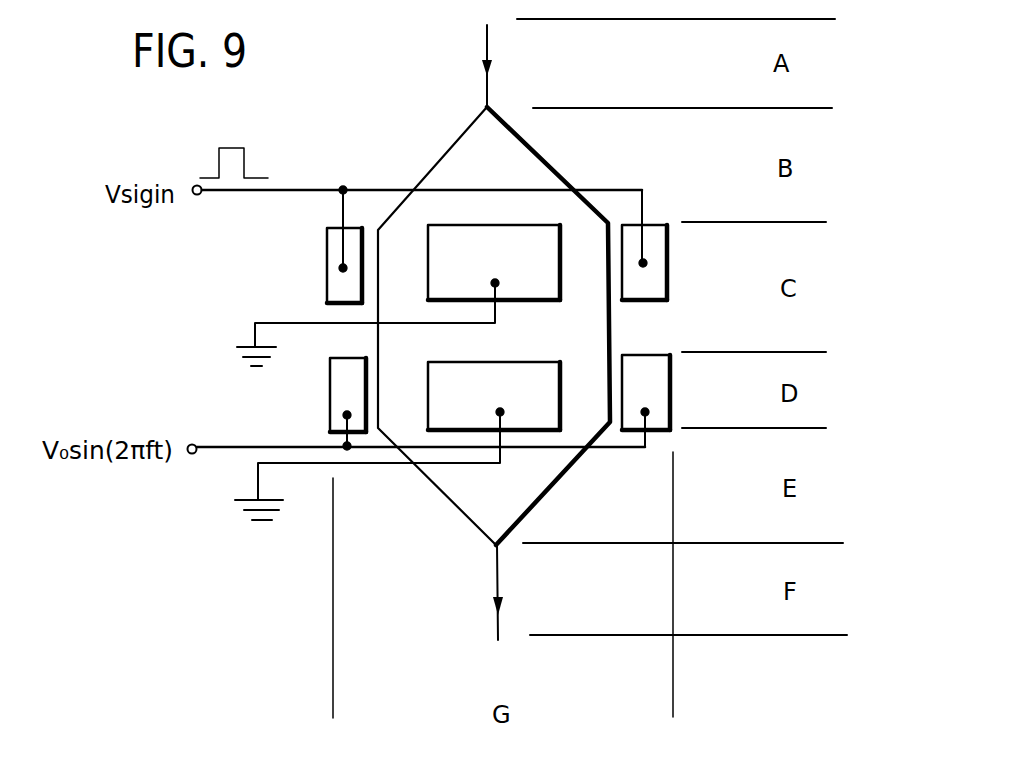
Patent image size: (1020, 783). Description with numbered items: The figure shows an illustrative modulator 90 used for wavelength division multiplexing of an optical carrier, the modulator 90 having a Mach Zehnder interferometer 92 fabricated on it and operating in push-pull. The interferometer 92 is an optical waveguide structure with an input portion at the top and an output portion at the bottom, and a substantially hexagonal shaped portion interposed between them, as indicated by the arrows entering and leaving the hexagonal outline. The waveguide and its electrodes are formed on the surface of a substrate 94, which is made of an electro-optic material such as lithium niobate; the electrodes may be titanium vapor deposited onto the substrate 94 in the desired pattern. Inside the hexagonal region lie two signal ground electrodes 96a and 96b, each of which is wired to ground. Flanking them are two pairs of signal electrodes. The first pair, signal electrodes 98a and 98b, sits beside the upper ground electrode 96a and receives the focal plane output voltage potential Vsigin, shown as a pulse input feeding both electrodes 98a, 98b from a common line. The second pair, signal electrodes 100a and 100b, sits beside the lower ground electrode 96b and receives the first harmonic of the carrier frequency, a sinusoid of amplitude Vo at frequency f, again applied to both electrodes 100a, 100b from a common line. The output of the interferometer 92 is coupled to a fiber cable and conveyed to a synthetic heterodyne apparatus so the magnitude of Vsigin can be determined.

The modulator 90 is at (468, 318).
The Mach Zehnder interferometer 92 is at (453, 143).
The substrate 94 is at (500, 160).
The signal ground electrode 96a is at (530, 303).
The signal ground electrode 96b is at (505, 361).
The signal electrode 98a is at (327, 258).
The signal electrode 98b is at (667, 255).
The signal electrode 100a is at (330, 403).
The signal electrode 100b is at (670, 395).